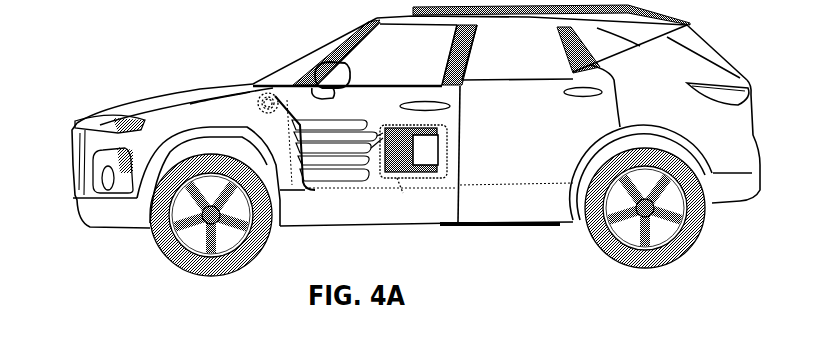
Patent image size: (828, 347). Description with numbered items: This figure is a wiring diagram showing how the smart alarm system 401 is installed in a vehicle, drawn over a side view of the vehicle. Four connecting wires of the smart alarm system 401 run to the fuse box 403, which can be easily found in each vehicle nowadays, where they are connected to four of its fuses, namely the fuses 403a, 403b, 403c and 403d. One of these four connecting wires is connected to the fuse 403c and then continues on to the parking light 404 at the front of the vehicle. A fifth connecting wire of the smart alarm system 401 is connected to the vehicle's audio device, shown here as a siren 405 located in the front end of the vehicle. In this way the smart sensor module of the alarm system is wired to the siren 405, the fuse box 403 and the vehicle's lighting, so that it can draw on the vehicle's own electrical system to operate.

The smart alarm system 401 is at (423, 178).
The fuse box 403 is at (272, 110).
The fuse 403a is at (265, 112).
The fuse 403b is at (270, 110).
The fuse 403c is at (213, 98).
The fuse 403d is at (266, 112).
The parking light 404 is at (95, 128).
The siren 405 is at (142, 180).